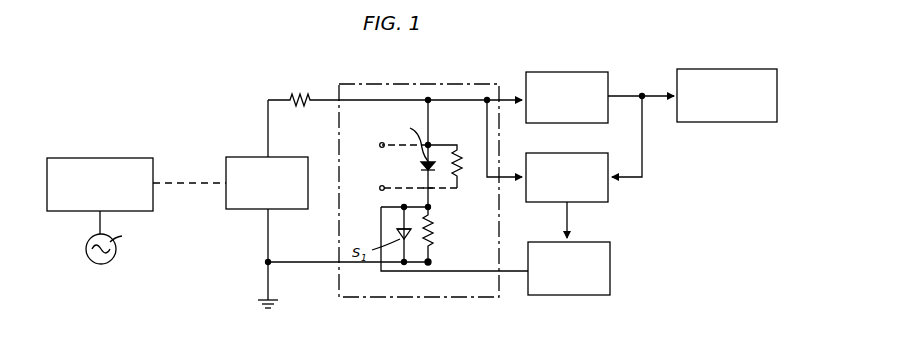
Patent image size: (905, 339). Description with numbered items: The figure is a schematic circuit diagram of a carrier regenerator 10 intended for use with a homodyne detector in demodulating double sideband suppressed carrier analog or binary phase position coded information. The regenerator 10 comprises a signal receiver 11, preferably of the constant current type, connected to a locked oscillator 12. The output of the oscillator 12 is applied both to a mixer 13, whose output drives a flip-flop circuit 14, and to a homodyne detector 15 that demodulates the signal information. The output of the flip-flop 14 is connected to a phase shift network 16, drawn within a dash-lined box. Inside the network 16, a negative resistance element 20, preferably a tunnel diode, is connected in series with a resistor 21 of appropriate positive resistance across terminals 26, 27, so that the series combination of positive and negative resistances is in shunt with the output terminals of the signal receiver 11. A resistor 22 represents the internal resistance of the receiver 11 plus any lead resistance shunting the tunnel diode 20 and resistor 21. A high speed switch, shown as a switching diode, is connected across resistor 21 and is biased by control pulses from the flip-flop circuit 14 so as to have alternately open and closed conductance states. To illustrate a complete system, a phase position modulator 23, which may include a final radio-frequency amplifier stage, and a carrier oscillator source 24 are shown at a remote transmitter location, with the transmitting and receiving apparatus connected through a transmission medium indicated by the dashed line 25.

The carrier regenerator 10 is at (576, 326).
The signal receiver 11 is at (285, 210).
The locked oscillator 12 is at (553, 72).
The mixer 13 is at (558, 153).
The flip-flop circuit 14 is at (611, 264).
The homodyne detector 15 is at (717, 69).
The phase shift network 16 is at (432, 297).
The negative resistance element 20 is at (433, 160).
The resistor 21 is at (434, 226).
The resistor 22 is at (318, 84).
The phase position modulator 23 is at (90, 158).
The carrier oscillator source 24 is at (116, 247).
The dashed line 25 is at (168, 183).
The terminal 26 is at (432, 98).
The terminal 27 is at (432, 262).